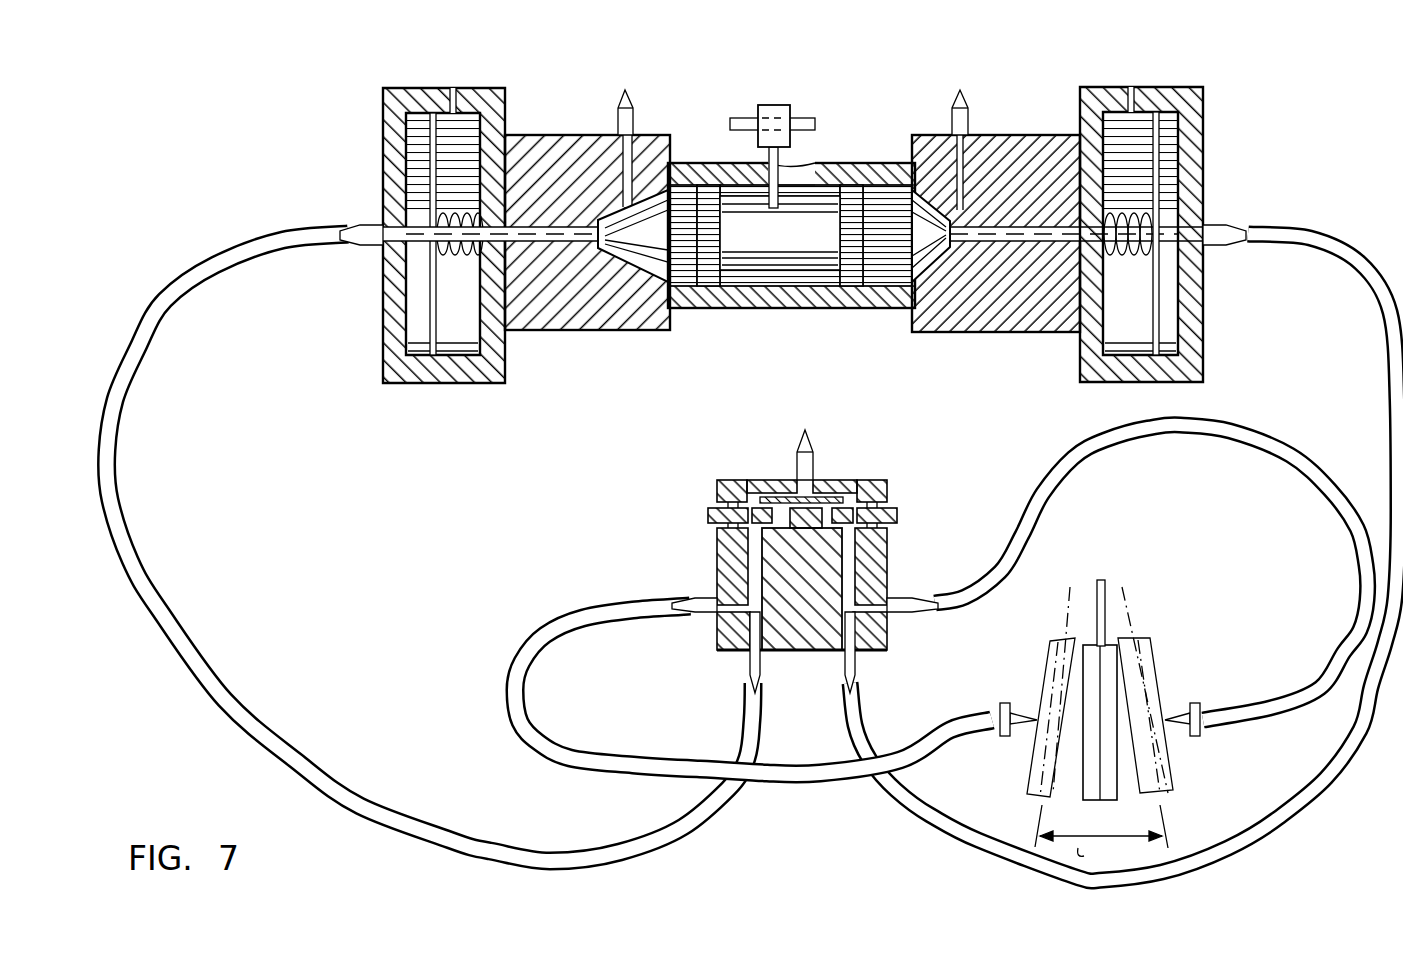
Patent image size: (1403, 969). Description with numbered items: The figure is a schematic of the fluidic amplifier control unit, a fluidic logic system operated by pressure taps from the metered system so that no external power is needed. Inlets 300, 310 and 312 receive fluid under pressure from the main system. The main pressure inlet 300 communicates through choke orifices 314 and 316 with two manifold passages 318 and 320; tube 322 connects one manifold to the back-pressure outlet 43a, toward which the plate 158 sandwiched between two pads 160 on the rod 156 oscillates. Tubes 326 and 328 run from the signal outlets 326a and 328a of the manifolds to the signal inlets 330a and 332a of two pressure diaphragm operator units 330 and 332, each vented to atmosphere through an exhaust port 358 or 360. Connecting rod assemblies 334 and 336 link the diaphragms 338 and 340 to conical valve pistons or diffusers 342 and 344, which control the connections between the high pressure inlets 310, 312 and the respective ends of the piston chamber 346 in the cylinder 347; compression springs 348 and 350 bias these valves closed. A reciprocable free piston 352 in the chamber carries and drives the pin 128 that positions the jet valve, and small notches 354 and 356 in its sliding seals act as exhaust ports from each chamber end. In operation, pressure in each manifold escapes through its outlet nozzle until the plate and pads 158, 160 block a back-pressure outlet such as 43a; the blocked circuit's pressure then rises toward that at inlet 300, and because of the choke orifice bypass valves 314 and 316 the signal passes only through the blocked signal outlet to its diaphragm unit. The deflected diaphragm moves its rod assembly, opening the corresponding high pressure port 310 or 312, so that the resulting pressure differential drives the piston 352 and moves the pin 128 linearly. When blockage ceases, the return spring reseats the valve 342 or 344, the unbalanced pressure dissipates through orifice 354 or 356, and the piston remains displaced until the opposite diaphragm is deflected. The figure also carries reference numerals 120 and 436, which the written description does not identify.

The ultrasonic transducer 120 is at (803, 113).
The pin 128 is at (772, 105).
The rod 156 is at (1100, 583).
The plate 158 is at (1090, 665).
The pads 160 is at (1118, 795).
The inlet 300 is at (800, 447).
The inlet 310 is at (964, 96).
The inlet 312 is at (628, 92).
The choke orifice 314 is at (895, 508).
The choke orifice 316 is at (710, 507).
The manifold passage 318 is at (857, 548).
The manifold passage 320 is at (750, 557).
The tube 322 is at (950, 613).
The tube 326 is at (1390, 406).
The signal outlet 326a is at (860, 660).
The tube 328 is at (222, 268).
The signal outlet 328a is at (745, 663).
The pressure diaphragm operator unit 330 is at (1205, 128).
The signal inlet 330a is at (1222, 216).
The pressure diaphragm operator unit 332 is at (385, 135).
The signal inlet 332a is at (357, 218).
The connecting rod assembly 334 is at (1022, 255).
The connecting rod assembly 336 is at (548, 240).
The diaphragm 338 is at (1160, 298).
The diaphragm 340 is at (432, 302).
The conical valve piston 342 is at (938, 252).
The conical valve piston 344 is at (632, 258).
The piston chamber 346 is at (757, 270).
The cylinder 347 is at (703, 308).
The compression spring 348 is at (1088, 343).
The compression spring 350 is at (500, 350).
The free piston 352 is at (778, 258).
The notch 354 is at (850, 190).
The notch 356 is at (706, 185).
The exhaust port 358 is at (1131, 88).
The exhaust port 360 is at (455, 88).
The left probe connector 436 is at (1010, 740).
The back-pressure outlet 43a is at (1190, 740).